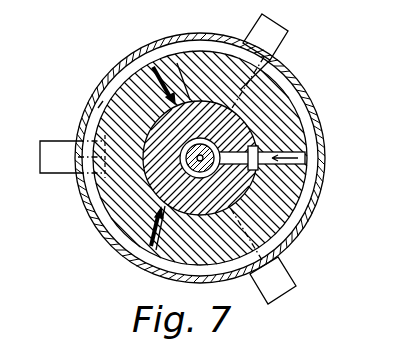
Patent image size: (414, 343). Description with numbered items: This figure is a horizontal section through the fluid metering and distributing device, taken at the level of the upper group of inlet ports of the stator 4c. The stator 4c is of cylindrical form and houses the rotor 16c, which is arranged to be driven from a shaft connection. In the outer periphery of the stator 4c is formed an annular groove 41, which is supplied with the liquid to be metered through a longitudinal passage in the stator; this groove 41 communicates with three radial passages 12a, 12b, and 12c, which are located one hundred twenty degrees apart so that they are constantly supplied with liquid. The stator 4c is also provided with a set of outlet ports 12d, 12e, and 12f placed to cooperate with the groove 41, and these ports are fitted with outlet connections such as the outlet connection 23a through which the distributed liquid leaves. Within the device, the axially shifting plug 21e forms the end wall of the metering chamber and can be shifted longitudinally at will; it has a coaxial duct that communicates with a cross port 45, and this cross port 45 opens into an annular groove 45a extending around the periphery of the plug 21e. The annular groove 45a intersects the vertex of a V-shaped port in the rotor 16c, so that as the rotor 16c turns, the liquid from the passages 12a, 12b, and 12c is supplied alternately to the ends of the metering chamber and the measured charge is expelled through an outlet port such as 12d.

The annular groove 41 is at (304, 207).
The cross port 45 is at (206, 143).
The annular groove 45a is at (123, 85).
The axially shifting plug 21e is at (157, 187).
The radial passage 12a is at (304, 153).
The radial passage 12b is at (147, 249).
The radial passage 12c is at (153, 67).
The outlet port 12d is at (100, 103).
The outlet port 12e is at (230, 262).
The outlet port 12f is at (252, 95).
The rotor 16c is at (237, 123).
The stator 4c is at (240, 226).
The outlet connection 23a is at (289, 30).